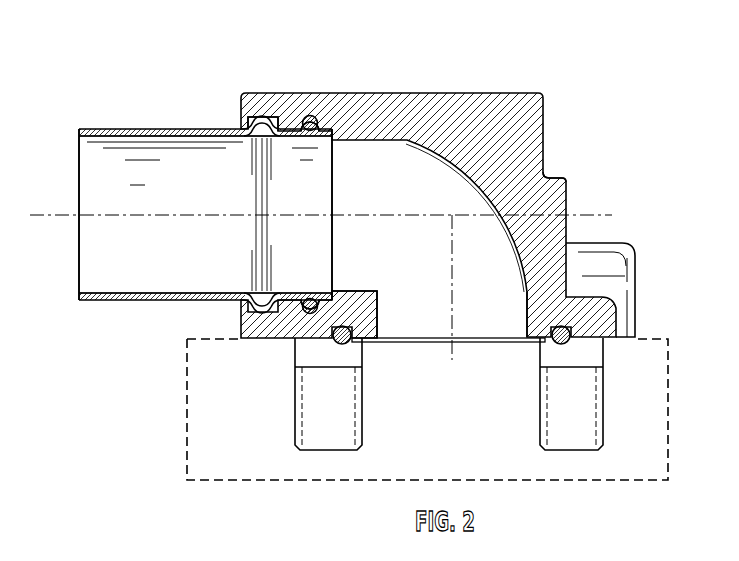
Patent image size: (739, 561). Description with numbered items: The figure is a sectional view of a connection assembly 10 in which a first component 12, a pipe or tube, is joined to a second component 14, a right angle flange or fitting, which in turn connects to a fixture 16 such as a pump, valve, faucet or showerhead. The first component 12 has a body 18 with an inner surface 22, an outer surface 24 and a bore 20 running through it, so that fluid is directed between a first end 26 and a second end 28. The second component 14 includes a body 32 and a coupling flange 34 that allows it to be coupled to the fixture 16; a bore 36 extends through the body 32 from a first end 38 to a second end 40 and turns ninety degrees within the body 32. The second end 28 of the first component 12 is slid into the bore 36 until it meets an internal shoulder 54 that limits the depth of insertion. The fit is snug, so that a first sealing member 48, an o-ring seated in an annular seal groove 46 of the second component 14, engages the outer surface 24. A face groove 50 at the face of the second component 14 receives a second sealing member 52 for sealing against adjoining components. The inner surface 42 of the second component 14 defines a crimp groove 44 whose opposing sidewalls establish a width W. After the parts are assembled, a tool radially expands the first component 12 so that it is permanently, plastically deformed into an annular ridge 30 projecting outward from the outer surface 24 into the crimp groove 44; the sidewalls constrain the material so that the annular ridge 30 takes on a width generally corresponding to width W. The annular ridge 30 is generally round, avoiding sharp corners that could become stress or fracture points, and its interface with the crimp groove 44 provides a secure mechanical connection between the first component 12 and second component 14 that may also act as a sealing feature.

The connection assembly 10 is at (626, 105).
The first component 12 is at (226, 198).
The second component 14 is at (448, 93).
The fixture 16 is at (670, 352).
The body 18 is at (108, 293).
The bore 20 is at (98, 183).
The inner surface 22 is at (207, 269).
The outer surface 24 is at (131, 128).
The first end 26 is at (79, 271).
The second end 28 is at (334, 188).
The annular ridge 30 is at (262, 125).
The body 32 is at (556, 178).
The coupling flange 34 is at (598, 315).
The bore 36 is at (413, 320).
The first end 38 is at (225, 318).
The second end 40 is at (538, 345).
The inner surface 42 is at (411, 147).
The crimp groove 44 is at (276, 118).
The annular seal groove 46 is at (318, 127).
The first sealing member 48 is at (315, 120).
The face groove 50 is at (549, 318).
The second sealing member 52 is at (525, 338).
The internal shoulder 54 is at (358, 290).